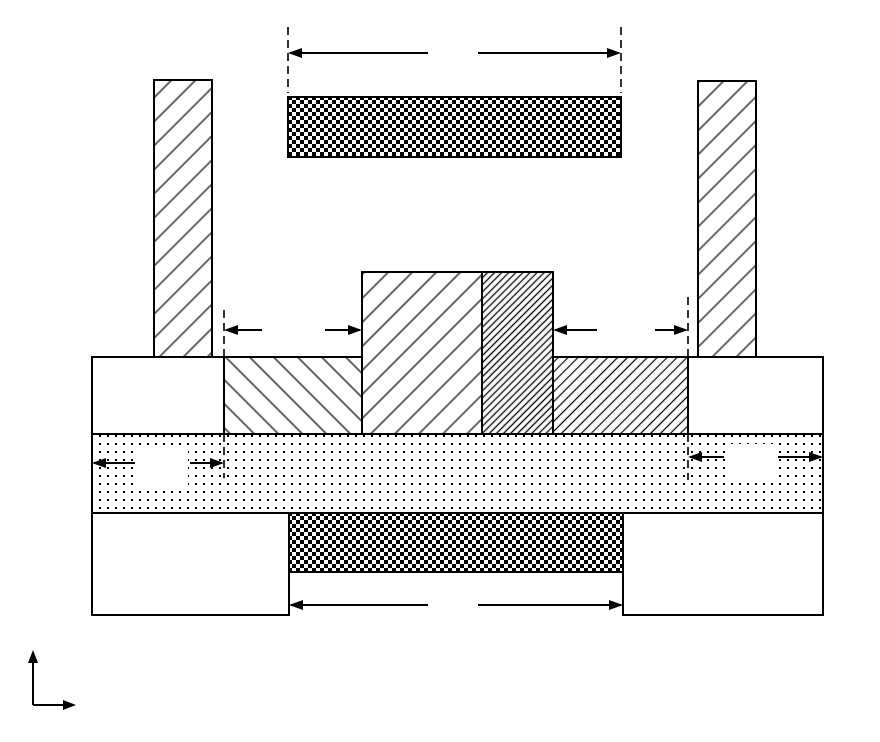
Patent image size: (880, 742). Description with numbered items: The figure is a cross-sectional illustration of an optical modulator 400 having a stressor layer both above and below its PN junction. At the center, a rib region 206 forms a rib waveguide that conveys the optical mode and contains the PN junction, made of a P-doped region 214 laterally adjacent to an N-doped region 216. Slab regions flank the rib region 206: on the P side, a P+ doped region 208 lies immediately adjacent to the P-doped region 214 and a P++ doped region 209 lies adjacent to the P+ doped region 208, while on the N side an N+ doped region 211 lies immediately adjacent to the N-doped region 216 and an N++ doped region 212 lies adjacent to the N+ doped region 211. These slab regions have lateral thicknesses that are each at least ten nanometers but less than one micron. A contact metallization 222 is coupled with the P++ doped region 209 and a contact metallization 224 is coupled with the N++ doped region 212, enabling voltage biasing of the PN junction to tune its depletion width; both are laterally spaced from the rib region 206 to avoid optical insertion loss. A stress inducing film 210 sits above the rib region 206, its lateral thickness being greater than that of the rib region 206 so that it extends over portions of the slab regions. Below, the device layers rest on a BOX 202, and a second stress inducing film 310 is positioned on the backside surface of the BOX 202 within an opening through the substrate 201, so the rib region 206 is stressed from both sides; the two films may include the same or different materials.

The optical modulator 400 is at (120, 74).
The substrate 201 is at (741, 576).
The BOX 202 is at (473, 489).
The rib region 206 is at (553, 272).
The P+ doped region 208 is at (308, 406).
The P++ doped region 209 is at (173, 406).
The stress inducing film 210 is at (471, 139).
The N+ doped region 211 is at (636, 406).
The N++ doped region 212 is at (771, 406).
The P-doped region 214 is at (428, 406).
The N-doped region 216 is at (534, 406).
The contact metallization 222 is at (176, 216).
The contact metallization 224 is at (722, 183).
The stress inducing film 310 is at (471, 554).